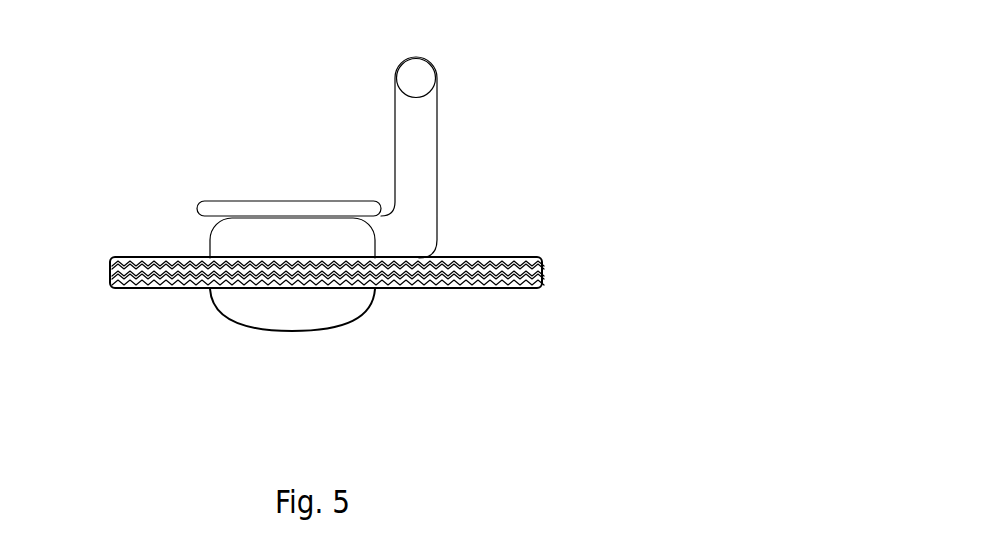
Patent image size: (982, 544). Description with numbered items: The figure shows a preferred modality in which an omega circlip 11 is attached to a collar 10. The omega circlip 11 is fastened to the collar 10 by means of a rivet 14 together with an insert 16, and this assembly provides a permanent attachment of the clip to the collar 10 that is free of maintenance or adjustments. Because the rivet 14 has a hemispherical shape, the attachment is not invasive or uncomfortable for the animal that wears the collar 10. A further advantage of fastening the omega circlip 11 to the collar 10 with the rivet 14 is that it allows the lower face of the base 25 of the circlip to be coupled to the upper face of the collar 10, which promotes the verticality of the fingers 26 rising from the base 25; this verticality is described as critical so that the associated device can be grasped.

The collar 10 is at (444, 292).
The omega circlip 11 is at (455, 101).
The rivet 14 is at (253, 308).
The insert 16 is at (215, 200).
The base 25 is at (205, 242).
The fingers 26 is at (409, 145).